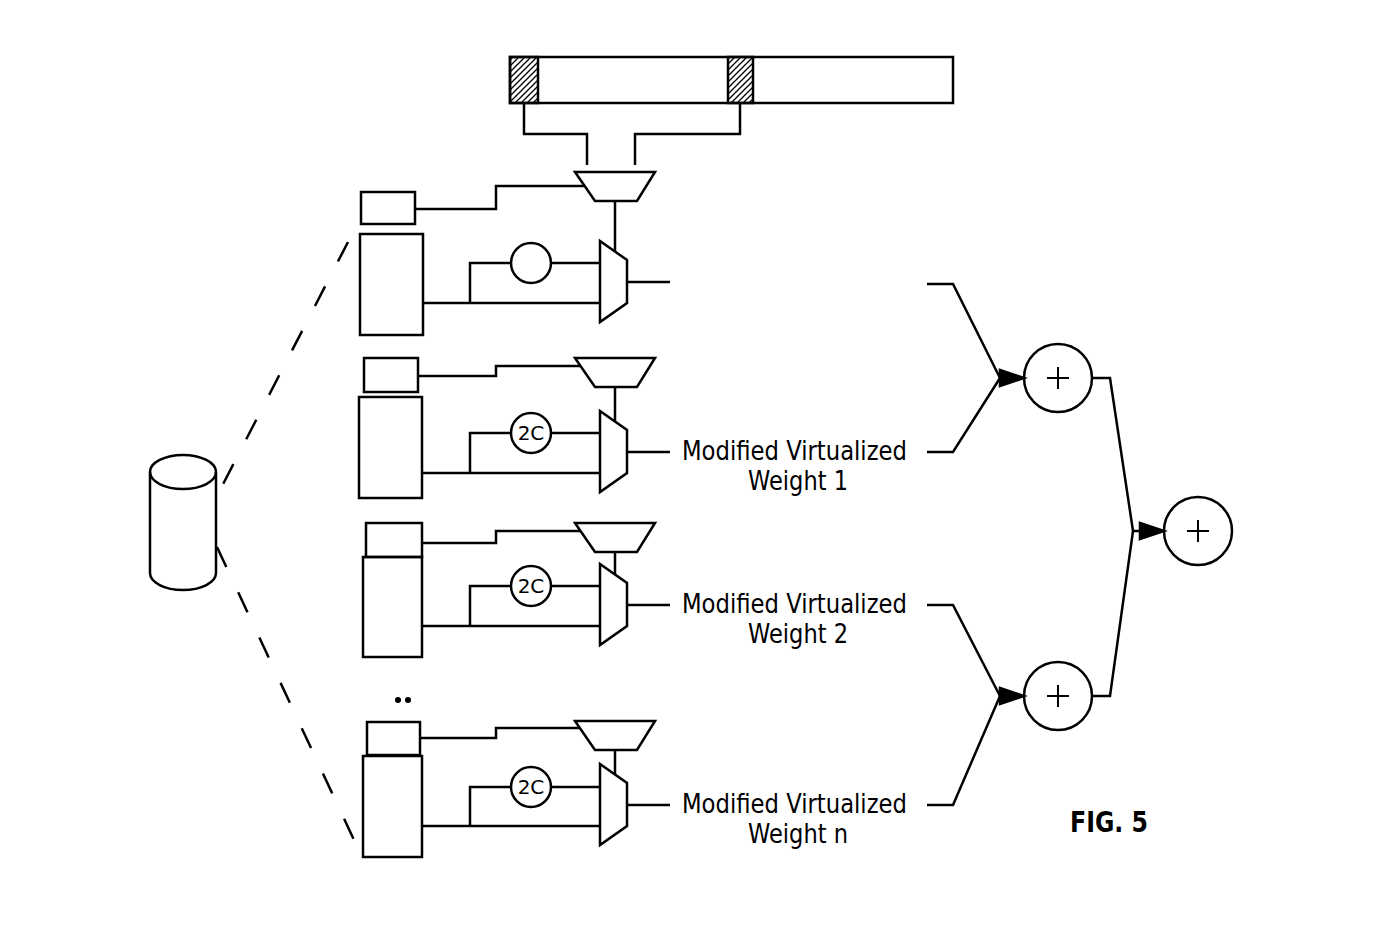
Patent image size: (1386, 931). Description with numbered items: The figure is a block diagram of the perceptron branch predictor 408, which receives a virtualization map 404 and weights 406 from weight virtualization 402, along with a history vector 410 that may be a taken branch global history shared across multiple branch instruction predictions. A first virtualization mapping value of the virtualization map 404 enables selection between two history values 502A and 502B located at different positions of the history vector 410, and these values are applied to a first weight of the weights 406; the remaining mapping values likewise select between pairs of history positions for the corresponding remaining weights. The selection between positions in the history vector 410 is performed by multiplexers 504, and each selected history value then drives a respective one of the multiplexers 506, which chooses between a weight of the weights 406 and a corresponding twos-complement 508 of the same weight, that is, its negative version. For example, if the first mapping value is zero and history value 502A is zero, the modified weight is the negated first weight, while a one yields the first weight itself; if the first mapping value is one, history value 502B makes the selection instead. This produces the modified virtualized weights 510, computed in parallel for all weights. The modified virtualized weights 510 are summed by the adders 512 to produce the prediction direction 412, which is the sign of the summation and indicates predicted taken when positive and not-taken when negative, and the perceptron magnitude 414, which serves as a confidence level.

The weight virtualization 402 is at (198, 667).
The virtualization map 404 is at (348, 166).
The weights 406 is at (334, 235).
The perceptron branch predictor 408 is at (1132, 477).
The history vector 410 is at (753, 44).
The prediction direction 412 is at (1337, 482).
The perceptron magnitude 414 is at (1259, 625).
The history value 502A is at (510, 68).
The history value 502B is at (753, 103).
The multiplexers 504 is at (666, 174).
The multiplexers 506 is at (642, 256).
The twos-complement 508 is at (533, 244).
The modified virtualized weights 510 is at (776, 246).
The adders 512 is at (1182, 388).